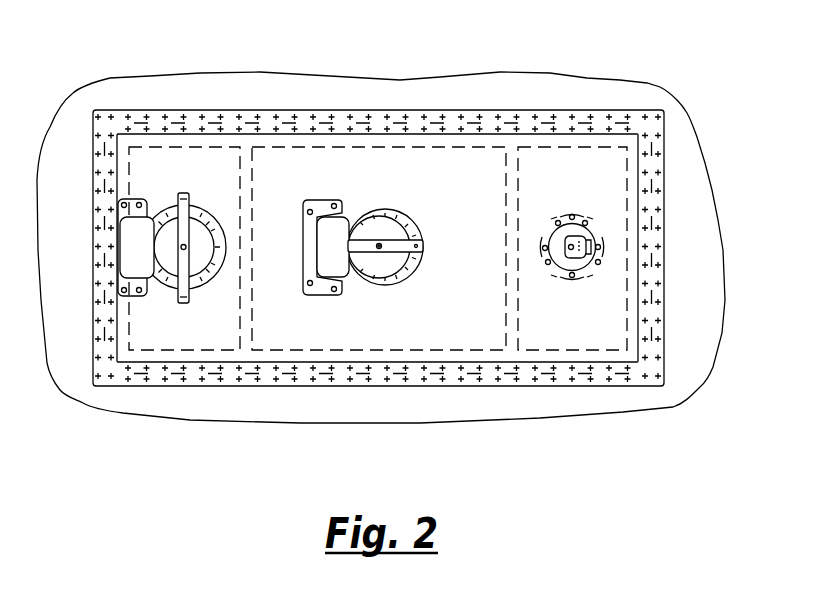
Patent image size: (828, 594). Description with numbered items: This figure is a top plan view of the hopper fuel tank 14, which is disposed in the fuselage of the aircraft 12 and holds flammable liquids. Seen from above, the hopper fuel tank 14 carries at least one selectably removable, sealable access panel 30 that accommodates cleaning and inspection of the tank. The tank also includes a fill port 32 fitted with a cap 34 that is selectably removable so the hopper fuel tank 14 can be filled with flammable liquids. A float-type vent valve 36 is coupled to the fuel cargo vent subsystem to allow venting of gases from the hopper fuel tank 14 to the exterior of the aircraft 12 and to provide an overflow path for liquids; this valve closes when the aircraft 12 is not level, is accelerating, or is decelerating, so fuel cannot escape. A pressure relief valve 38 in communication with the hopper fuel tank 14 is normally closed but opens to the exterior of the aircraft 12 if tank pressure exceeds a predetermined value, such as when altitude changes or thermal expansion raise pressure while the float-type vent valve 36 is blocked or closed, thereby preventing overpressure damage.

The aircraft 12 is at (445, 86).
The hopper fuel tank 14 is at (170, 110).
The access panel 30 is at (237, 147).
The fill port 32 is at (572, 217).
The cap 34 is at (572, 268).
The float-type vent valve 36 is at (398, 210).
The pressure relief valve 38 is at (217, 214).